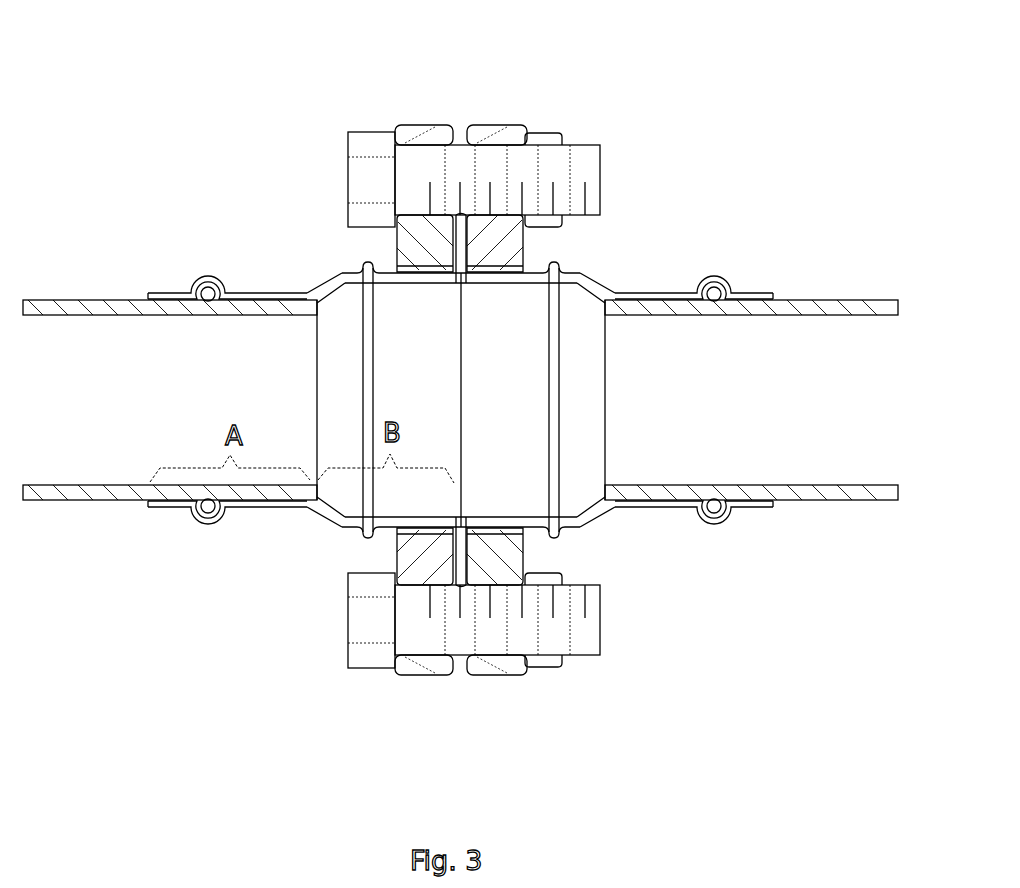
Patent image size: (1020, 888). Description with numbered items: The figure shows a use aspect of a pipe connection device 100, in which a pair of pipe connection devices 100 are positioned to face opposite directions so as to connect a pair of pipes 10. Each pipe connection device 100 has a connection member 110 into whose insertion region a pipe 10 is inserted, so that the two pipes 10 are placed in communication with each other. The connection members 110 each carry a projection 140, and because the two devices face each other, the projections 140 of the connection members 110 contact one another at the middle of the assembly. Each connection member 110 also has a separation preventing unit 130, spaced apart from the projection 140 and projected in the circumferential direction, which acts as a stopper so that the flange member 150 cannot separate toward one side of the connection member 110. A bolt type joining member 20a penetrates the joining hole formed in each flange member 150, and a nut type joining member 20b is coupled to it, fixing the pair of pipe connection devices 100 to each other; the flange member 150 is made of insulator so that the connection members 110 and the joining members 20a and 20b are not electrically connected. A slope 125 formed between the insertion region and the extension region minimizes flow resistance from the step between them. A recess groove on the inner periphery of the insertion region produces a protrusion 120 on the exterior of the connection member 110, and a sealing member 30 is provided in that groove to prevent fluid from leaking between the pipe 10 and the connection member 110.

The pipe 10 is at (112, 500).
The pipe connection device 100 is at (450, 364).
The connection member 110 is at (311, 532).
The protrusion 120 is at (701, 289).
The slope 125 is at (323, 288).
The separation preventing unit 130 is at (366, 264).
The projection 140 is at (453, 550).
The flange member 150 is at (499, 114).
The bolt type joining member 20a is at (347, 178).
The nut type joining member 20b is at (547, 133).
The sealing member 30 is at (722, 284).